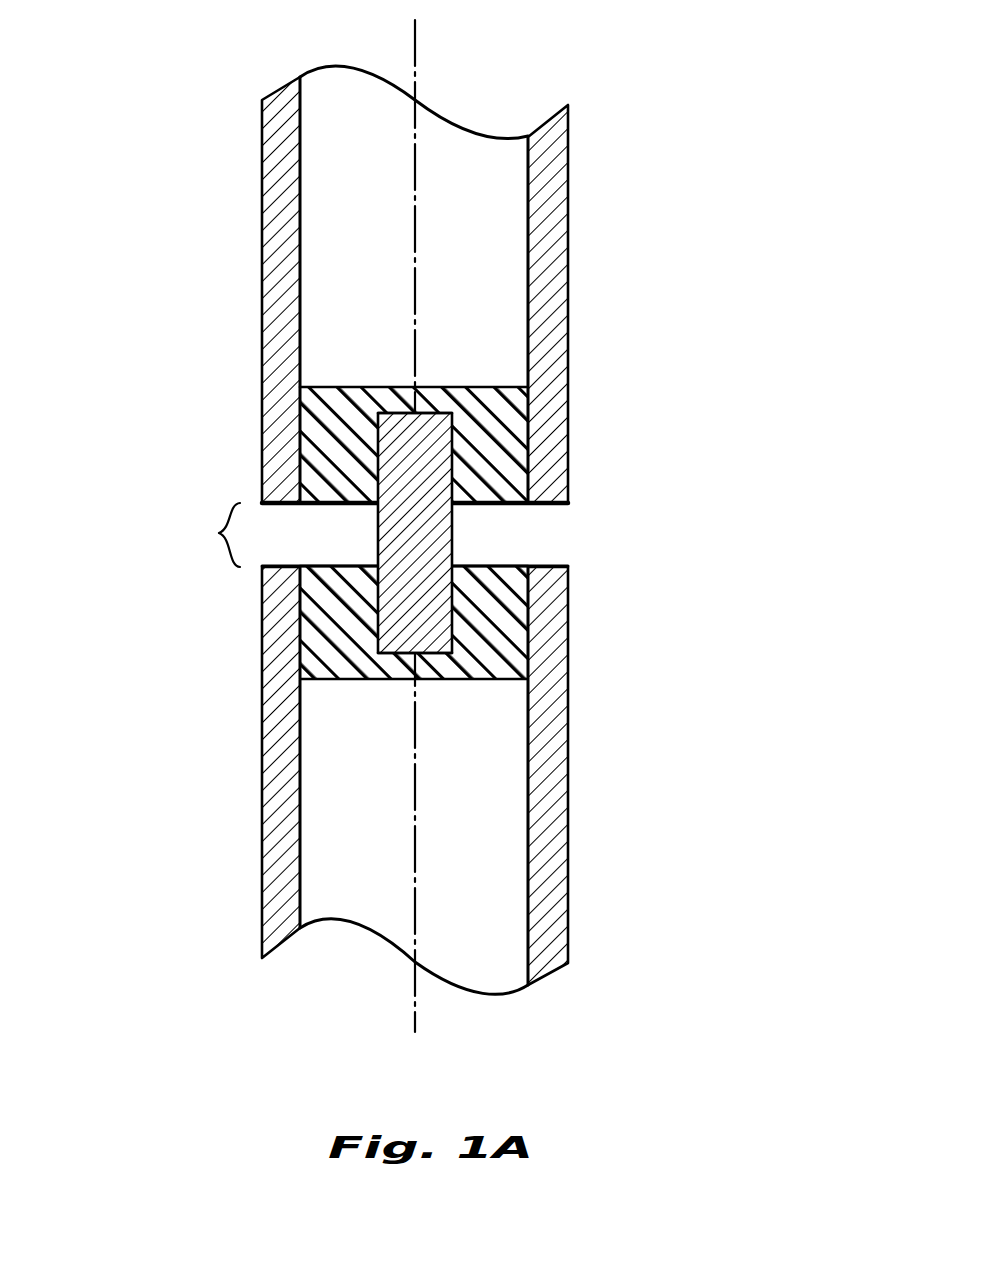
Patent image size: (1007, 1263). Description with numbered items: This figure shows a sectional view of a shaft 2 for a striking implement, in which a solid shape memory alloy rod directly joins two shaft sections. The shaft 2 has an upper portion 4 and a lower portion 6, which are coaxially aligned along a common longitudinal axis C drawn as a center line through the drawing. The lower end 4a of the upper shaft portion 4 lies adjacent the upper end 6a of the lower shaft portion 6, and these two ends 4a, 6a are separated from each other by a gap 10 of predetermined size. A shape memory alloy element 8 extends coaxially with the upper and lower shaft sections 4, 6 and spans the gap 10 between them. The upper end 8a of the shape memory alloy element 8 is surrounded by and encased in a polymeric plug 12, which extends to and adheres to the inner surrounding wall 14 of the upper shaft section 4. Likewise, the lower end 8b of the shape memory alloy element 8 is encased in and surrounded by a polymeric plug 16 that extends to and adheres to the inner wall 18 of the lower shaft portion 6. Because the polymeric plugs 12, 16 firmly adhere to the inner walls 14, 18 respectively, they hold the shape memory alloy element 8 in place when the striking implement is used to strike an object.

The shaft 2 is at (356, 518).
The longitudinal axis C is at (415, 42).
The upper shaft portion 4 is at (568, 242).
The lower end of the upper shaft portion 4a is at (572, 483).
The lower shaft portion 6 is at (568, 748).
The upper end of the lower shaft portion 6a is at (572, 577).
The shape memory alloy element 8 is at (454, 521).
The upper end of the shape memory element 8a is at (456, 427).
The lower end of the shape memory alloy 8b is at (456, 637).
The gap 10 is at (214, 533).
The polymeric plug 12 is at (483, 395).
The inner surrounding wall 14 is at (527, 240).
The polymeric plug 16 is at (491, 681).
The inner wall 18 is at (527, 842).